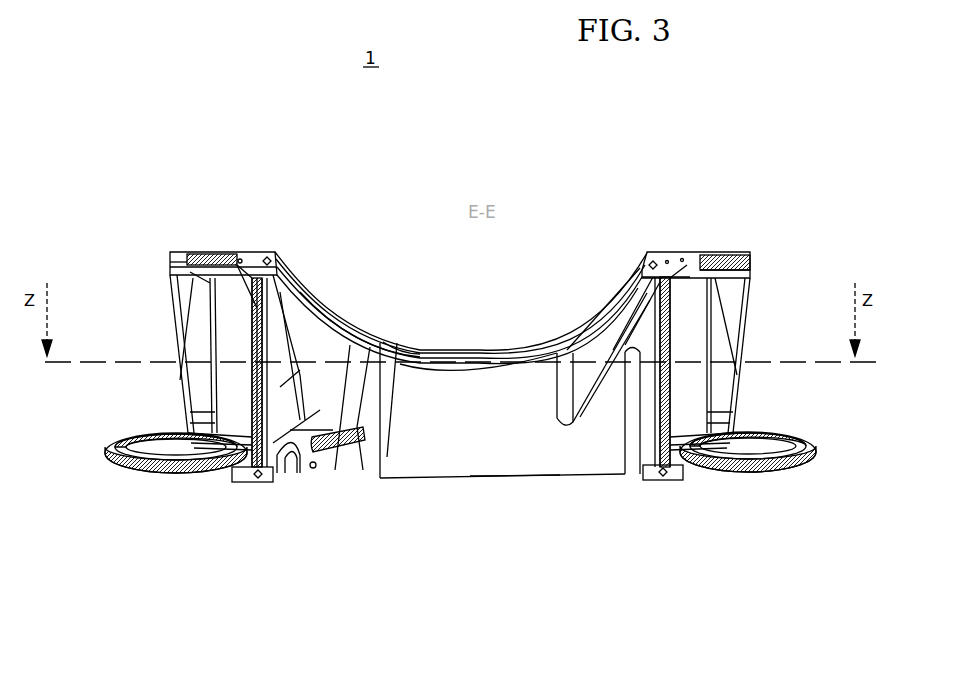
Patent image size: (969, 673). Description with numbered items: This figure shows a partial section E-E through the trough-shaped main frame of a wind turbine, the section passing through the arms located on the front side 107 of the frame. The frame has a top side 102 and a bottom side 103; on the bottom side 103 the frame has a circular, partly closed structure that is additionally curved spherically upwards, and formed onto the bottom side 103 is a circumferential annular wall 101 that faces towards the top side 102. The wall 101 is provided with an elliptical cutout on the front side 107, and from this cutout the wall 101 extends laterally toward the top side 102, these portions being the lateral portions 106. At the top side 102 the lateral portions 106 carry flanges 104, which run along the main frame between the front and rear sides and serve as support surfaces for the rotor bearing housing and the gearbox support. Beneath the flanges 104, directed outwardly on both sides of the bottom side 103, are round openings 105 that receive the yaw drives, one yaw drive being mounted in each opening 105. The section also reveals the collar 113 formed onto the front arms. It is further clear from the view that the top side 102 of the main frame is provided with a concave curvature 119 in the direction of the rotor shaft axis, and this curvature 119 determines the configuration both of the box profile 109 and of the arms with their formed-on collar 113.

The annular wall 101 is at (496, 436).
The top side 102 is at (541, 285).
The bottom side 103 is at (582, 486).
The flange 104 is at (210, 247).
The round opening 105 is at (175, 472).
The lateral portion 106 is at (234, 347).
The front side 107 is at (508, 526).
The box profile 109 is at (388, 428).
The collar 113 is at (348, 350).
The concave curvature 119 is at (421, 343).